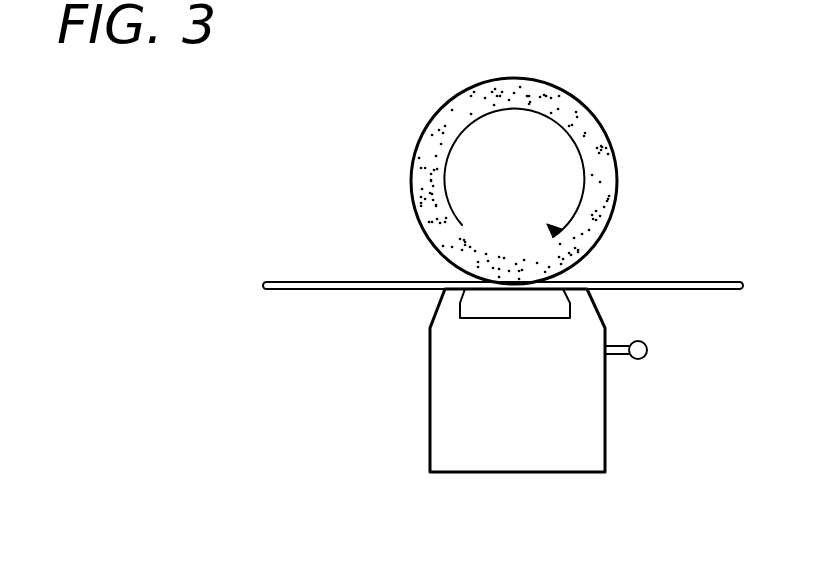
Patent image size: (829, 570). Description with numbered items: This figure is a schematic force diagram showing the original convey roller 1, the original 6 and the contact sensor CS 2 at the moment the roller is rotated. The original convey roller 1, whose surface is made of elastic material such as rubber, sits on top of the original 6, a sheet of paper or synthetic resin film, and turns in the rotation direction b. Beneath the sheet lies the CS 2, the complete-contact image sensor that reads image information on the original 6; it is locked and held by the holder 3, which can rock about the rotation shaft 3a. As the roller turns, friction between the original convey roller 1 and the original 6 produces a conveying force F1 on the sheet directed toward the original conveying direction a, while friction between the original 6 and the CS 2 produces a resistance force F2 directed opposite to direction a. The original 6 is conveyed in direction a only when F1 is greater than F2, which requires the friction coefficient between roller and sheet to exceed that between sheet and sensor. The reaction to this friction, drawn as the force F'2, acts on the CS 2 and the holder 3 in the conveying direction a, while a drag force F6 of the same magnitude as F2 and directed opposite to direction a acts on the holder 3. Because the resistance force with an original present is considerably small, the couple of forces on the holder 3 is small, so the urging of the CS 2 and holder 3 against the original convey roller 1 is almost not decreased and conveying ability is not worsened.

The original convey roller 1 is at (556, 92).
The contact sensor (CS) 2 is at (487, 320).
The holder 3 is at (605, 418).
The rotation shaft 3a is at (647, 354).
The original 6 is at (733, 281).
The original conveying direction a is at (236, 287).
The roller rotation direction b is at (514, 183).
The conveying force F1 is at (450, 269).
The resistance force F2 is at (623, 299).
The reaction friction force F'2 is at (402, 304).
The drag force F6 is at (605, 462).